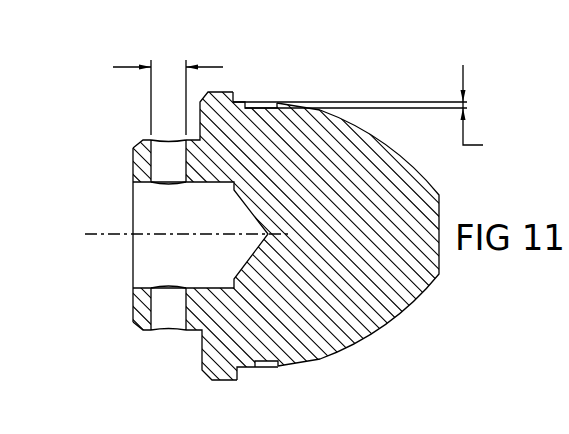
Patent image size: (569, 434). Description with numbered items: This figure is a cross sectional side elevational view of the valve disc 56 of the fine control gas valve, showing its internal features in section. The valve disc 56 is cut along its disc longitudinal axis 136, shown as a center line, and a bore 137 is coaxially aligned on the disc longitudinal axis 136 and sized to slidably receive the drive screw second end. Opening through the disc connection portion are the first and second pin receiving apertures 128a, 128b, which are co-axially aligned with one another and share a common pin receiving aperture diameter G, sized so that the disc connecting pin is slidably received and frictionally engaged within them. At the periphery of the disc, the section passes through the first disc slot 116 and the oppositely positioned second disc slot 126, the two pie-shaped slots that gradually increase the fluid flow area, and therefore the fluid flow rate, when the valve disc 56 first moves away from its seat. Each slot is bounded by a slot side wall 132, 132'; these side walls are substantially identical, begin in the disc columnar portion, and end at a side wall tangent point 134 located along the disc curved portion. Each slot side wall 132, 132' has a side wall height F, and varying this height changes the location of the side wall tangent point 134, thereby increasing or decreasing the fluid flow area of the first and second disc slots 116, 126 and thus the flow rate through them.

The valve disc 56 is at (106, 135).
The first pin receiving aperture 128a is at (163, 162).
The second pin receiving aperture 128b is at (168, 318).
The bore 137 is at (204, 183).
The disc longitudinal axis 136 is at (120, 237).
The slot side wall 132' is at (269, 85).
The second disc slot 126 is at (268, 108).
The side wall tangent point 134 is at (330, 366).
The first disc slot 116 is at (270, 367).
The slot side wall 132 is at (241, 392).
The pin receiving aperture diameter G is at (168, 96).
The side wall height F is at (363, 110).